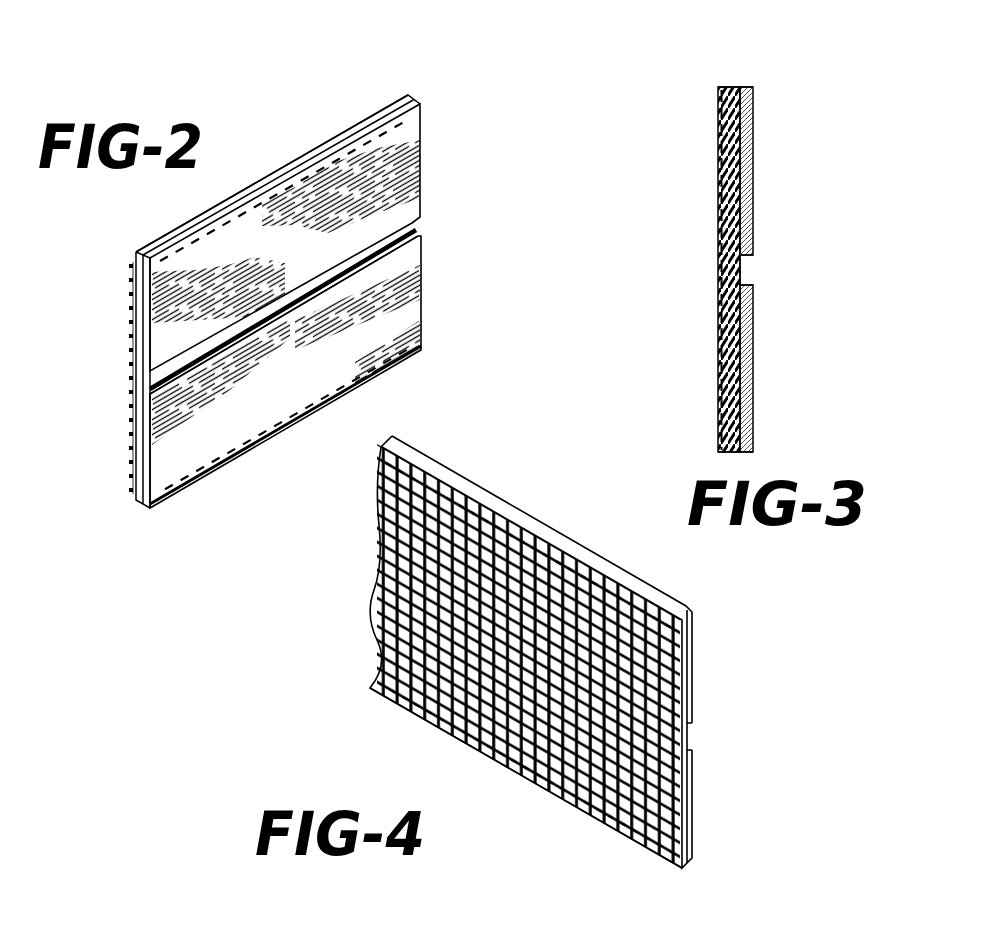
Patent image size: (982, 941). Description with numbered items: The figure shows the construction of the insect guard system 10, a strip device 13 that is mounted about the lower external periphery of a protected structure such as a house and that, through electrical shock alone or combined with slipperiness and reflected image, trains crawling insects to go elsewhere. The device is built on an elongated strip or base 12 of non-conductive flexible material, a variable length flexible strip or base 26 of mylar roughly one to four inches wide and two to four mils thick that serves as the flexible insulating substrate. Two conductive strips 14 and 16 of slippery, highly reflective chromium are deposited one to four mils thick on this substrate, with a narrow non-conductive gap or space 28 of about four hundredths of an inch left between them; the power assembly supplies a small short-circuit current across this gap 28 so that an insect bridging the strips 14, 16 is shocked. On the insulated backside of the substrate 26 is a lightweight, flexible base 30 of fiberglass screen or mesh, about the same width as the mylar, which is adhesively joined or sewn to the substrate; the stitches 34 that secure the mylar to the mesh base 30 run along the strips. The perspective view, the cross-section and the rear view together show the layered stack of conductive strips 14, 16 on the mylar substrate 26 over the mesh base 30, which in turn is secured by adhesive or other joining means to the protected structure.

In FIG. 2, the insect guard system 10 is at (318, 121).
In FIG. 2, the elongated strip or base 12 is at (143, 244).
In FIG. 2, the strip device 13 is at (390, 98).
In FIG. 2, the conductive strip 14 is at (262, 225).
In FIG. 3, the conductive strip 14 is at (747, 183).
In FIG. 4, the conductive strip 14 is at (697, 660).
In FIG. 2, the conductive strip 16 is at (182, 460).
In FIG. 3, the conductive strip 16 is at (753, 378).
In FIG. 4, the conductive strip 16 is at (693, 802).
In FIG. 2, the flexible strip or base 26 is at (138, 500).
In FIG. 3, the flexible strip or base 26 is at (731, 86).
In FIG. 4, the flexible strip or base 26 is at (680, 870).
In FIG. 2, the non-conductive gap or space 28 is at (417, 226).
In FIG. 3, the non-conductive gap or space 28 is at (746, 262).
In FIG. 4, the non-conductive gap or space 28 is at (692, 737).
In FIG. 2, the flexible base 30 is at (130, 348).
In FIG. 3, the flexible base 30 is at (722, 185).
In FIG. 4, the flexible base 30 is at (388, 597).
In FIG. 2, the stitches 34 is at (218, 235).
In FIG. 4, the stitches 34 is at (535, 550).